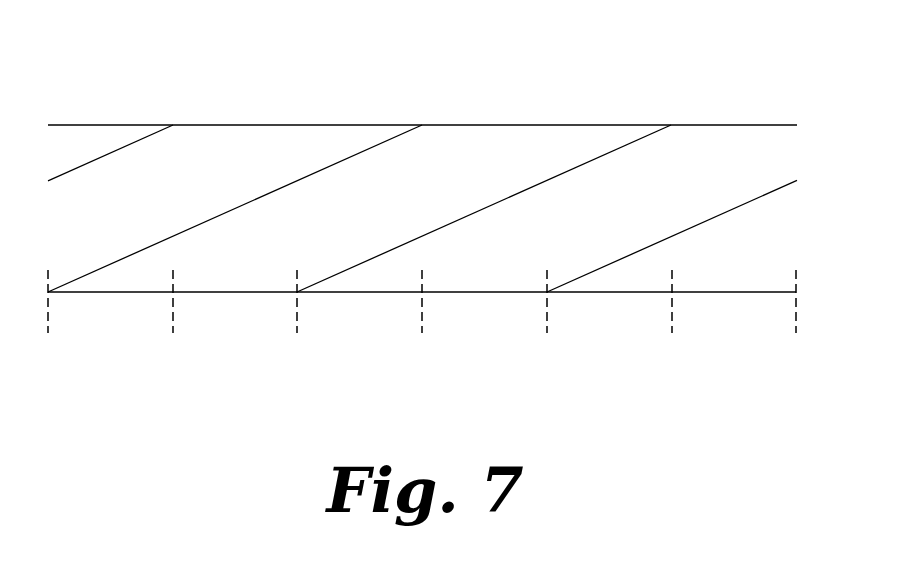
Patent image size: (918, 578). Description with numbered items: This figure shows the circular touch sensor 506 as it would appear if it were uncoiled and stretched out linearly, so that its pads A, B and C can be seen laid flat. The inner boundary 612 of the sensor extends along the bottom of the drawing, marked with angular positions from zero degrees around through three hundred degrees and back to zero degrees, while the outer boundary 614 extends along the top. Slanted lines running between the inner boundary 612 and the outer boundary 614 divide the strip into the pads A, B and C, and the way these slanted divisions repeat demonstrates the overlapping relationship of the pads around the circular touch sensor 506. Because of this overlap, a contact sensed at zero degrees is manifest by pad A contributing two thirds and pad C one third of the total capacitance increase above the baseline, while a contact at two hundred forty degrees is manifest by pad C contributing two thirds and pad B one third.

The circular touch sensor 506 is at (432, 198).
The inner boundary 612 is at (767, 291).
The outer boundary 614 is at (733, 125).